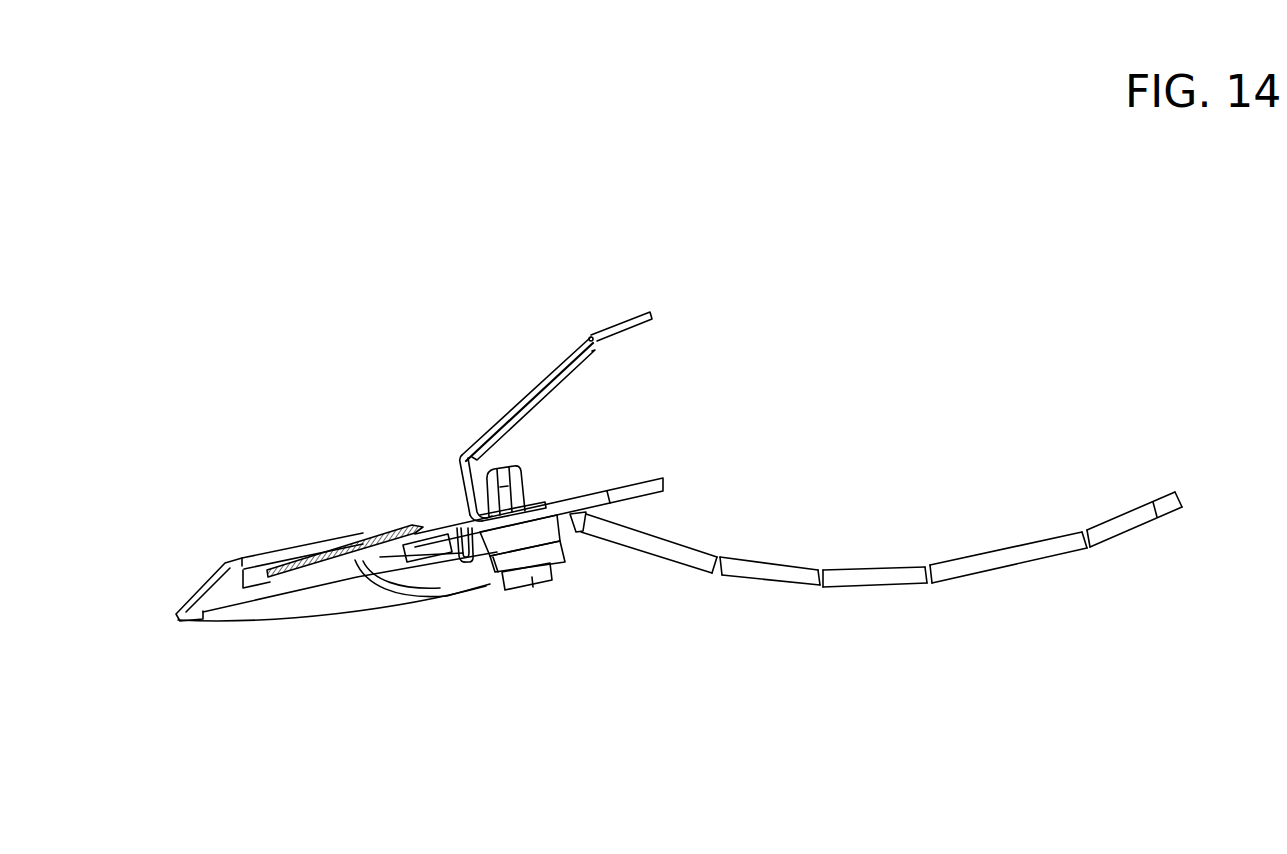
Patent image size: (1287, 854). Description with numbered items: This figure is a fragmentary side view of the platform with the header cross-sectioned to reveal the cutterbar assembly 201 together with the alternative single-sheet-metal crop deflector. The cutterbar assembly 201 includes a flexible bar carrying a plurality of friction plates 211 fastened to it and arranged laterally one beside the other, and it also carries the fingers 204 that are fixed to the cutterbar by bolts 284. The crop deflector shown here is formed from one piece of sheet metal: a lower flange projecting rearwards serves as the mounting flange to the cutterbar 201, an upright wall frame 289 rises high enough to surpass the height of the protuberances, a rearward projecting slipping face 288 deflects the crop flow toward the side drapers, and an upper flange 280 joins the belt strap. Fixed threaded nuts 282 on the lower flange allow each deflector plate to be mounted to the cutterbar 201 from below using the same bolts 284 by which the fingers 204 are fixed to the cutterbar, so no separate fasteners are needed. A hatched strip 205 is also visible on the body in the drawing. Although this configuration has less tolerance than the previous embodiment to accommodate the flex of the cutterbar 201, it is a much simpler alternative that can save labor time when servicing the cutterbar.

The cutterbar assembly 201 is at (262, 477).
The fingers 204 is at (327, 593).
The hatched strip / pad 205 is at (410, 526).
The friction plates 211 is at (755, 582).
The upper flange 280 is at (612, 312).
The fixed threaded nuts 282 is at (503, 488).
The bolts 284 is at (530, 580).
The rearward projecting slipping face 288 is at (457, 498).
The upright wall frame 289 is at (523, 400).